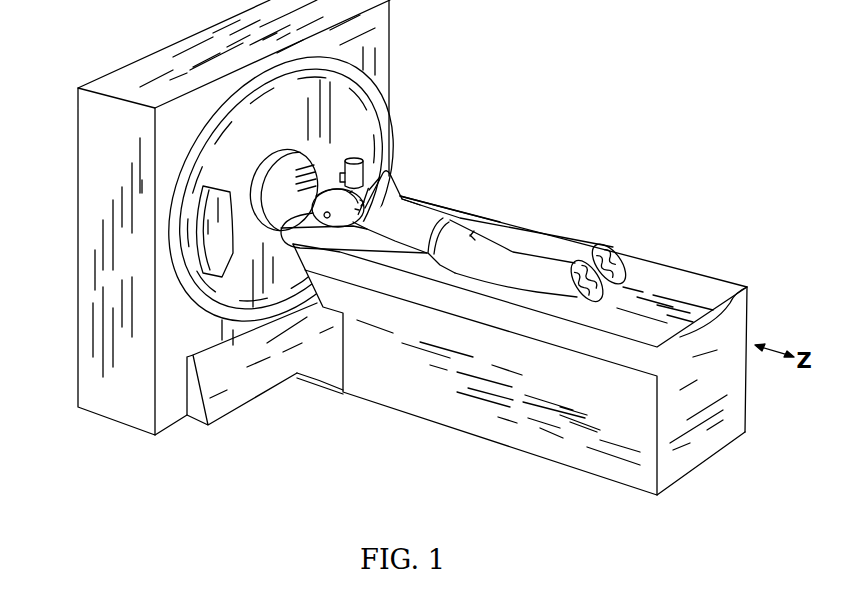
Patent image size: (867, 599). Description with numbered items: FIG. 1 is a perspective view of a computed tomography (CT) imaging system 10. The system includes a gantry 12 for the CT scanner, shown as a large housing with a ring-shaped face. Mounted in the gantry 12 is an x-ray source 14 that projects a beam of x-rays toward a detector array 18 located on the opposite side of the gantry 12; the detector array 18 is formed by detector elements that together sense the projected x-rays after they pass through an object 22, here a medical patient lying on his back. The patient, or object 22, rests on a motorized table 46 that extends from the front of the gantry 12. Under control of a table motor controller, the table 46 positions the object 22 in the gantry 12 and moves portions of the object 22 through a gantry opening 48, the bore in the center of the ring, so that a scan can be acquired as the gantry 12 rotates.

The computed tomography (CT) imaging system 10 is at (288, 447).
The gantry 12 is at (93, 130).
The x-ray source 14 is at (366, 164).
The detector array 18 is at (216, 262).
The object 22 is at (403, 212).
The motorized table 46 is at (420, 397).
The gantry opening 48 is at (307, 167).